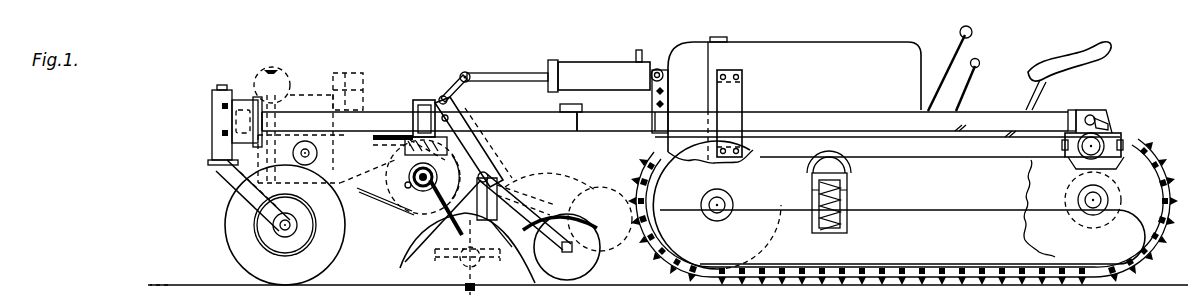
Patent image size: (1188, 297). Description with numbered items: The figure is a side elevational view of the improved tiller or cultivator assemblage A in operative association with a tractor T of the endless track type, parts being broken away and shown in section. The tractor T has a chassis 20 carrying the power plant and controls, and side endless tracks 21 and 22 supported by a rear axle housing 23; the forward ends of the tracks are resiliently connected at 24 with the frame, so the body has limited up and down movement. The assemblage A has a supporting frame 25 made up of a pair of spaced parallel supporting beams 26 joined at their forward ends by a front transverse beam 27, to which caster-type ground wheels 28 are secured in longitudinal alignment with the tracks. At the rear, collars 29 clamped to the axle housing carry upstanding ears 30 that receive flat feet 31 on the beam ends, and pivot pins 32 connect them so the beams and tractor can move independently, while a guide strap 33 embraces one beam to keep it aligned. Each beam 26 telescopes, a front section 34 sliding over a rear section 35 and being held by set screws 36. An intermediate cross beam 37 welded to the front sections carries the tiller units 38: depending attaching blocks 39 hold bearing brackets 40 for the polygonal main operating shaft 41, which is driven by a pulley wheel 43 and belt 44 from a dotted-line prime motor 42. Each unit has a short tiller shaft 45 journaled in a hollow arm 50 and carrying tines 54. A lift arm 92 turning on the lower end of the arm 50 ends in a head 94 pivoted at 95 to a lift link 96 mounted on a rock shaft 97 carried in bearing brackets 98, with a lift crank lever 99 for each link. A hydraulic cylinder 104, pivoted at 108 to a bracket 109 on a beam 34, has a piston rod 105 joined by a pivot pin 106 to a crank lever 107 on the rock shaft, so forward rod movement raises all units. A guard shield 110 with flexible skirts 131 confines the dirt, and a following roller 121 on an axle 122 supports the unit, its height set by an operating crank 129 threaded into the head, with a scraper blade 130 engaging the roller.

The chassis 20 is at (966, 150).
The endless track 21 is at (972, 287).
The endless track 22 is at (1157, 149).
The rear axle housing 23 is at (1115, 139).
The resilient connection 24 is at (844, 193).
The supporting frame 25 is at (268, 110).
The supporting beam 26 is at (544, 116).
The front transverse beam 27 is at (238, 113).
The ground wheel 28 is at (235, 229).
The collar 29 is at (1060, 143).
The upstanding ear 30 is at (1100, 112).
The flat foot 31 is at (1082, 109).
The pivot pin 32 is at (1102, 122).
The guide strap 33 is at (736, 97).
The front beam section 34 is at (372, 122).
The rear beam section 35 is at (878, 90).
The set screw 36 is at (564, 106).
The intermediate cross beam 37 is at (424, 100).
The tiller unit 38 is at (414, 248).
The attaching block 39 is at (376, 156).
The bearing bracket 40 is at (392, 171).
The main operating shaft 41 is at (404, 186).
The prime motor 42 is at (310, 96).
The pulley wheel 43 is at (418, 204).
The pulley belt 44 is at (372, 200).
The tiller shaft 45 is at (473, 264).
The hollow arm 50 is at (477, 174).
The tine 54 is at (468, 290).
The lift arm 92 is at (491, 248).
The head 94 is at (525, 196).
The pivot 95 is at (488, 170).
The lift link 96 is at (480, 122).
The rock shaft 97 is at (462, 102).
The bearing bracket 98 is at (430, 100).
The lift crank lever 99 is at (448, 125).
The cylinder 104 is at (600, 71).
The piston rod 105 is at (499, 73).
The pivot pin 106 is at (467, 74).
The crank lever 107 is at (454, 76).
The pivotal connection 108 is at (658, 71).
The bracket 109 is at (668, 94).
The guard shield 110 is at (412, 266).
The following roller 121 is at (600, 246).
The axle 122 is at (558, 250).
The operating crank 129 is at (538, 190).
The scraper blade 130 is at (574, 203).
The flexible skirt 131 is at (542, 290).
The tiller or cultivator assemblage A is at (420, 68).
The tractor T is at (980, 102).